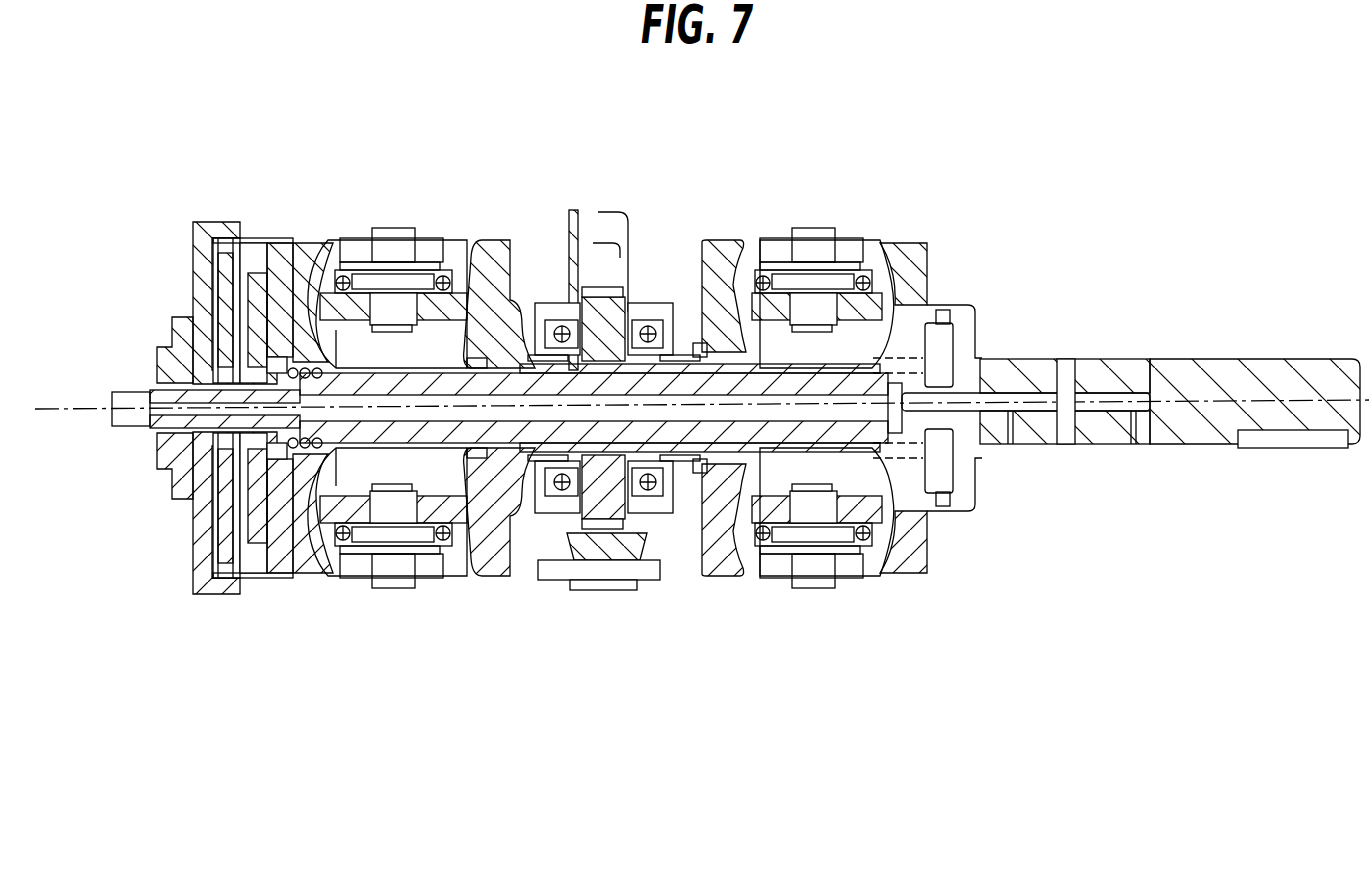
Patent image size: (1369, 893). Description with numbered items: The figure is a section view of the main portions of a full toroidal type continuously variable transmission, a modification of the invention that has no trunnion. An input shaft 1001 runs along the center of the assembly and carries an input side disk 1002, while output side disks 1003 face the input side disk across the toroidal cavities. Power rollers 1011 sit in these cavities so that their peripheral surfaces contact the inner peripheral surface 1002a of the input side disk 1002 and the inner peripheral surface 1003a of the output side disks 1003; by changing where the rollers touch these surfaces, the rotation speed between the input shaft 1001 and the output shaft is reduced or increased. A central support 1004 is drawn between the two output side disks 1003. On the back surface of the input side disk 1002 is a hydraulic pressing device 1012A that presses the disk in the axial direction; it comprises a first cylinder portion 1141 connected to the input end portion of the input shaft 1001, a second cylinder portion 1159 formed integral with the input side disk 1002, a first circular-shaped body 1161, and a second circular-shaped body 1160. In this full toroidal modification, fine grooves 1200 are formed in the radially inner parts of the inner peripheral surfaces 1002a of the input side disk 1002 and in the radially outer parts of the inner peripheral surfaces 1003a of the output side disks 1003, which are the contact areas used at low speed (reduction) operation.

The input shaft 1001 is at (422, 375).
The input side disk 1002 is at (305, 243).
The inner peripheral surface of the input side disk 1002a is at (852, 243).
The output side disk 1003 is at (496, 242).
The inner peripheral surface of the output side disk 1003a is at (548, 300).
The support plate 1004 is at (607, 286).
The power roller 1011 is at (398, 228).
The pressing device 1012A is at (183, 228).
The first cylinder portion 1141 is at (214, 236).
The second cylinder portion 1159 is at (268, 238).
The second circular-shaped body 1160 is at (318, 243).
The first circular-shaped body 1161 is at (192, 282).
The fine grooves 1200 is at (468, 258).